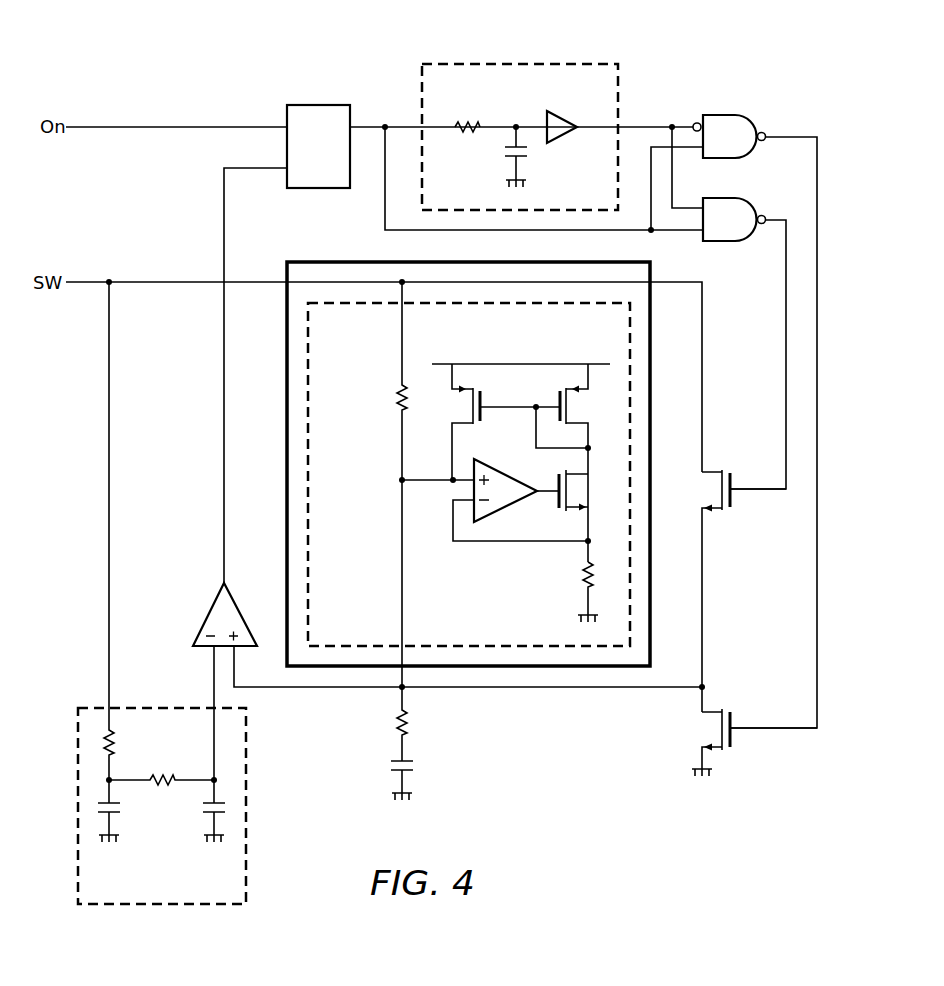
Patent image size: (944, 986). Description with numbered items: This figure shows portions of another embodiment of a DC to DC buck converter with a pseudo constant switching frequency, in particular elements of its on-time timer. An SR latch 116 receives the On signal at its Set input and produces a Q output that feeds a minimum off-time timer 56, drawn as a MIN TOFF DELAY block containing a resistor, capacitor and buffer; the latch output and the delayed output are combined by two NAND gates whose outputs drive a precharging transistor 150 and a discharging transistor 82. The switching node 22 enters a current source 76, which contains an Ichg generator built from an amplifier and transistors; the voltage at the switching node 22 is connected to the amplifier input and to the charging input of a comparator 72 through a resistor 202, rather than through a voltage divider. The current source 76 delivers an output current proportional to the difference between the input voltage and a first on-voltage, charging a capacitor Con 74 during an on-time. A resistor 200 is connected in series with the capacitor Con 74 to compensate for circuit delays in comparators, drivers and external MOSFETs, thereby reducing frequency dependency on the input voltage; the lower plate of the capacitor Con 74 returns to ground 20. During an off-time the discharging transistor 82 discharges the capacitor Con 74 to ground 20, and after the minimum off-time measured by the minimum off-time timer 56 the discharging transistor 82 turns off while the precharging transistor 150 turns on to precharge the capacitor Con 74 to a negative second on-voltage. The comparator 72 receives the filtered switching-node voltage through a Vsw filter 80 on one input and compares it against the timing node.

The SR latch 116 is at (315, 105).
The minimum off-time timer 56 is at (543, 60).
The current source 76 is at (468, 444).
The switching node 22 is at (90, 282).
The resistor 202 is at (396, 398).
The precharging transistor 150 is at (731, 497).
The comparator 72 is at (208, 616).
The resistor 200 is at (396, 722).
The capacitor Con 74 is at (390, 765).
The ground 20 is at (412, 797).
The discharging transistor 82 is at (731, 738).
The Vsw filter 80 is at (72, 810).